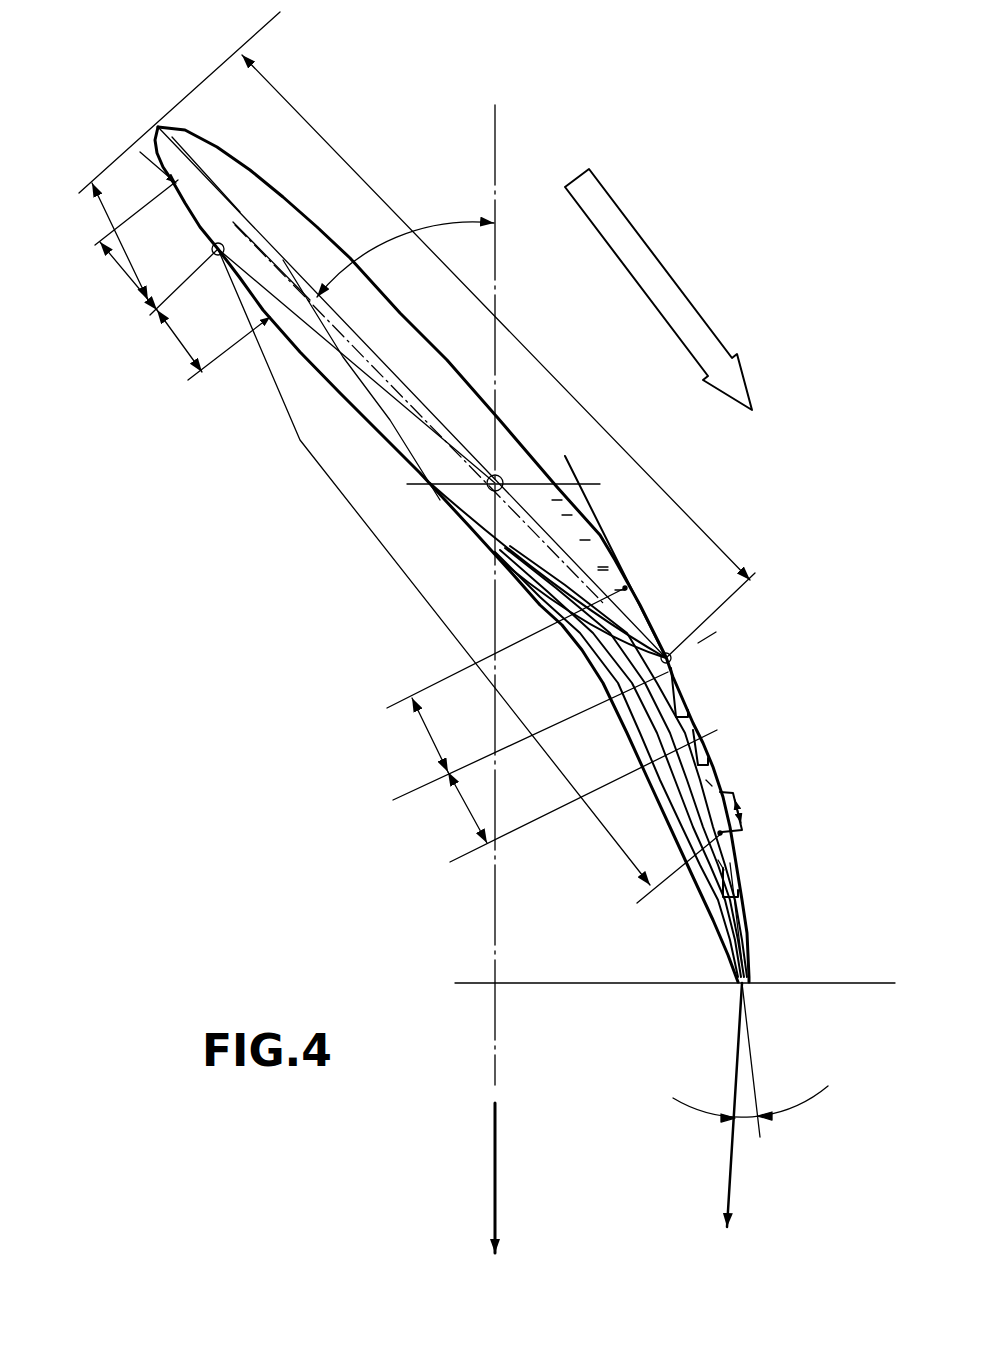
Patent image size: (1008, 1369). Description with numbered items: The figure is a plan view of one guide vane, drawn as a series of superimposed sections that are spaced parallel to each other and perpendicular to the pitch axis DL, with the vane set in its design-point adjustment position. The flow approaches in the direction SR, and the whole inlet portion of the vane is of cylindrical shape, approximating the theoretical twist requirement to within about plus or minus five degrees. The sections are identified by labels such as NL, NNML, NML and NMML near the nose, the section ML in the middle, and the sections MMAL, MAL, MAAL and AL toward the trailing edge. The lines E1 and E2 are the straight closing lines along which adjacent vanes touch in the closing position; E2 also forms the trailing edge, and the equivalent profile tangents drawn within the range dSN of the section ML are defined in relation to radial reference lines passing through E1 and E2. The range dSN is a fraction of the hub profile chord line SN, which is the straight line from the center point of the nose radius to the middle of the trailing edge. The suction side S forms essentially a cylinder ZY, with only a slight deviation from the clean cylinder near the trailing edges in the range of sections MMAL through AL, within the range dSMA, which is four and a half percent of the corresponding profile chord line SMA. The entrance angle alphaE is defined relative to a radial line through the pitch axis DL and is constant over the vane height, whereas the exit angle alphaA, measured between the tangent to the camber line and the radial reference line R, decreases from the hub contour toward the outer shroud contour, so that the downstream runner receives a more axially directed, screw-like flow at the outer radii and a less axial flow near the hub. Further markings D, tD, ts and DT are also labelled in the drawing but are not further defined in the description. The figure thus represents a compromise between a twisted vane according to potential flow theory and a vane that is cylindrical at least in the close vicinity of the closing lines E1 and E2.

The suction side S is at (313, 222).
The pressure side of blade D is at (337, 393).
The leading edge thickness tD is at (150, 170).
The hub profile chord line SN is at (580, 405).
The range of profile section dSN is at (122, 265).
The entrance angle alphaE is at (430, 222).
The direction of the flow SR is at (653, 245).
The radial reference line R is at (495, 325).
The cylinder ZY is at (505, 470).
The pitch axis DL is at (410, 484).
The profile chord line SMA is at (362, 522).
The straight closing line E1 is at (219, 258).
The straight touching line E2 is at (667, 652).
The suction side thickness ts is at (567, 462).
The nose line NL is at (560, 500).
The nose-nose-middle line NNML is at (567, 515).
The nose-middle line NML is at (585, 540).
The nose-middle-middle line NMML is at (603, 570).
The profile section ML is at (676, 664).
The profile section MMAL is at (693, 722).
The middle-trailing line MAL is at (710, 784).
The deviation range dSMA is at (745, 811).
The middle-trailing-trailing line MAAL is at (723, 870).
The profile section AL is at (745, 937).
The tangential direction DT is at (494, 1200).
The exit angle alphaA is at (747, 1120).